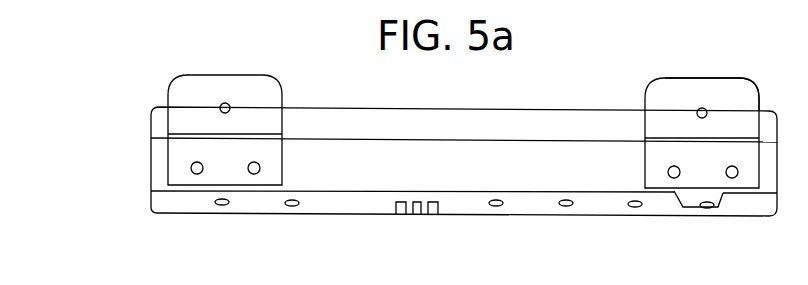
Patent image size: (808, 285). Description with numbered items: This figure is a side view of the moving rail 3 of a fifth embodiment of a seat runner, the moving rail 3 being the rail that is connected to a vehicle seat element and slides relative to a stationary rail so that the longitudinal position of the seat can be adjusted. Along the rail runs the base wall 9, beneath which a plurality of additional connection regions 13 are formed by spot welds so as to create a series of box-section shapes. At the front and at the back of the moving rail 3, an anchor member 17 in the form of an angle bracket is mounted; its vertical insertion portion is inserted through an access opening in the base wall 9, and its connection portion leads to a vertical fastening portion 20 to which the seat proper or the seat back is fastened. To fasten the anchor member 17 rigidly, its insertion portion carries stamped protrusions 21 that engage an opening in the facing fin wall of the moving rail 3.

The moving rail 3 is at (128, 163).
The base wall 9 is at (428, 140).
The additional connection regions 13 is at (635, 201).
The anchor member 17 is at (260, 102).
The fastening portion 20 is at (727, 93).
The protrusion 21 is at (252, 174).